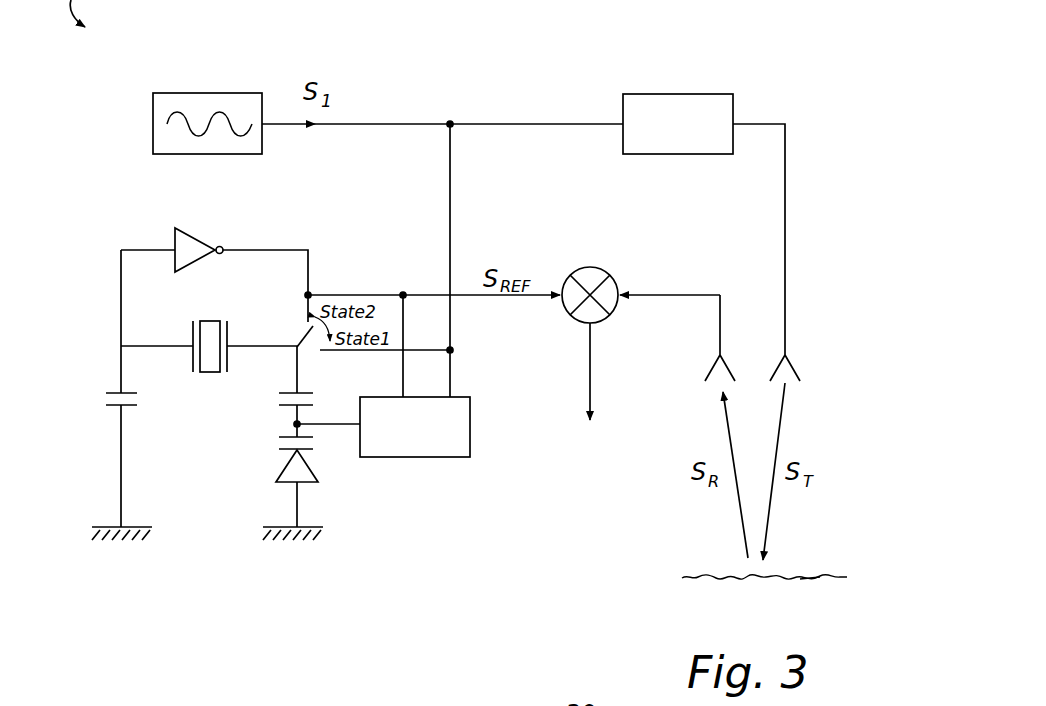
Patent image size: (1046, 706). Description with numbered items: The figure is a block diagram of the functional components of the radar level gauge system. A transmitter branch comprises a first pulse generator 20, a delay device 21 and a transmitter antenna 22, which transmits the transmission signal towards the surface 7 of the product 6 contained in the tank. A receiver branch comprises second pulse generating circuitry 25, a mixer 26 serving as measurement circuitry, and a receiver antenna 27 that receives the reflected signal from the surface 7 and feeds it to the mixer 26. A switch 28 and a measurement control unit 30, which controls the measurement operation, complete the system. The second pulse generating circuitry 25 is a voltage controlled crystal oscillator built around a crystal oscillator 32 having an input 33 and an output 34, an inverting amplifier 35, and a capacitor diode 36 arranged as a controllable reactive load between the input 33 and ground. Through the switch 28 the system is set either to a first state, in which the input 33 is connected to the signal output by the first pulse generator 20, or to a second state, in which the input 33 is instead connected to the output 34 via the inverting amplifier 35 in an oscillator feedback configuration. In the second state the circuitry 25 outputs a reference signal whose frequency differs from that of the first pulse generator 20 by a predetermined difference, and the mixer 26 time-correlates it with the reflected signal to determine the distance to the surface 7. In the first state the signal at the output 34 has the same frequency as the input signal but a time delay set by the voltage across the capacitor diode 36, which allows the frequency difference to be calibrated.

The first pulse generator 20 is at (210, 93).
The delay device 21 is at (660, 94).
The transmitter antenna 22 is at (788, 355).
The second pulse generating circuitry 25 is at (95, 247).
The mixer 26 is at (611, 272).
The receiver antenna 27 is at (720, 353).
The switch 28 is at (306, 351).
The measurement control unit 30 is at (433, 458).
The crystal oscillator 32 is at (212, 320).
The input 33 is at (236, 337).
The output 34 is at (184, 336).
The inverting amplifier 35 is at (198, 237).
The capacitor diode 36 is at (325, 478).
The product 6 is at (772, 620).
The surface 7 is at (808, 577).